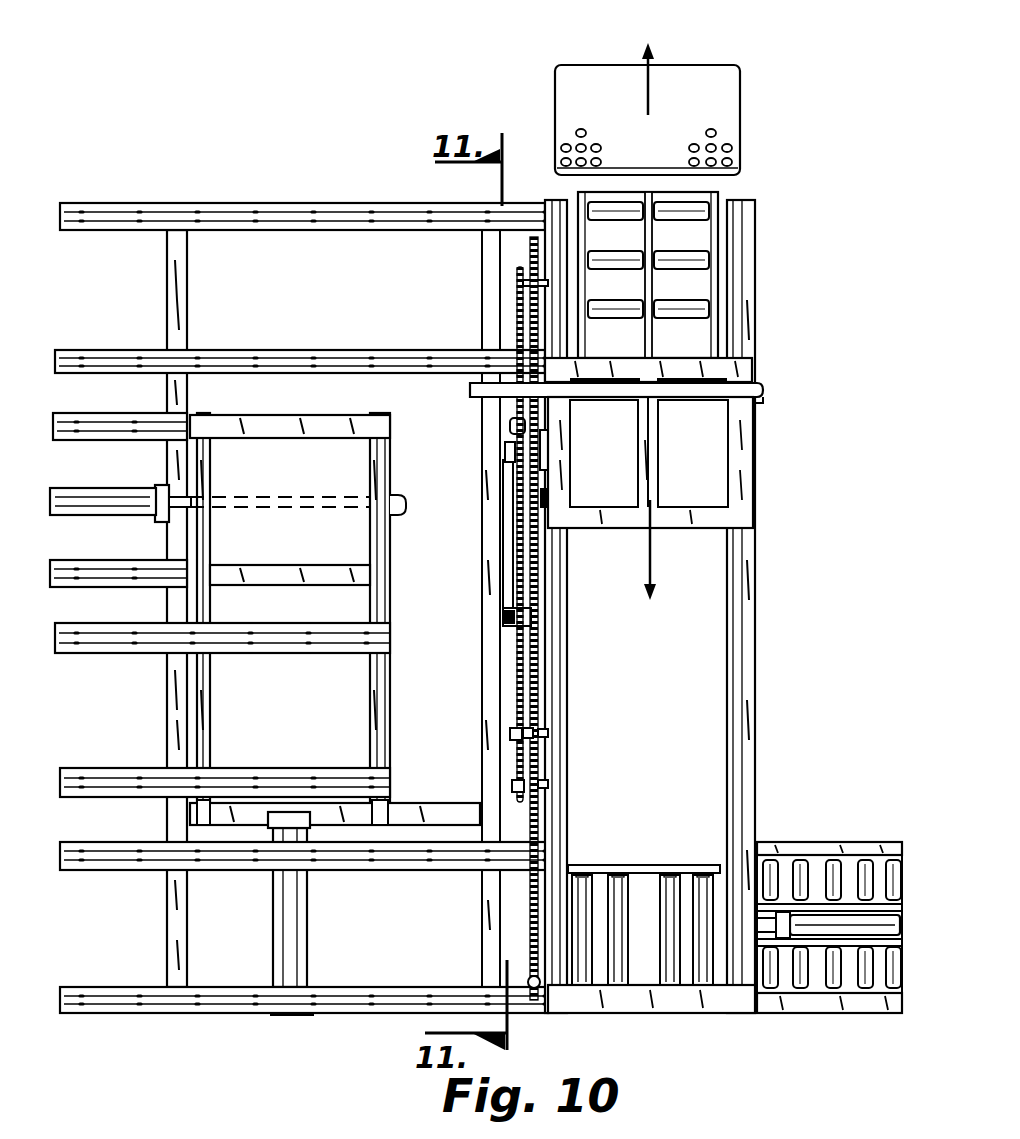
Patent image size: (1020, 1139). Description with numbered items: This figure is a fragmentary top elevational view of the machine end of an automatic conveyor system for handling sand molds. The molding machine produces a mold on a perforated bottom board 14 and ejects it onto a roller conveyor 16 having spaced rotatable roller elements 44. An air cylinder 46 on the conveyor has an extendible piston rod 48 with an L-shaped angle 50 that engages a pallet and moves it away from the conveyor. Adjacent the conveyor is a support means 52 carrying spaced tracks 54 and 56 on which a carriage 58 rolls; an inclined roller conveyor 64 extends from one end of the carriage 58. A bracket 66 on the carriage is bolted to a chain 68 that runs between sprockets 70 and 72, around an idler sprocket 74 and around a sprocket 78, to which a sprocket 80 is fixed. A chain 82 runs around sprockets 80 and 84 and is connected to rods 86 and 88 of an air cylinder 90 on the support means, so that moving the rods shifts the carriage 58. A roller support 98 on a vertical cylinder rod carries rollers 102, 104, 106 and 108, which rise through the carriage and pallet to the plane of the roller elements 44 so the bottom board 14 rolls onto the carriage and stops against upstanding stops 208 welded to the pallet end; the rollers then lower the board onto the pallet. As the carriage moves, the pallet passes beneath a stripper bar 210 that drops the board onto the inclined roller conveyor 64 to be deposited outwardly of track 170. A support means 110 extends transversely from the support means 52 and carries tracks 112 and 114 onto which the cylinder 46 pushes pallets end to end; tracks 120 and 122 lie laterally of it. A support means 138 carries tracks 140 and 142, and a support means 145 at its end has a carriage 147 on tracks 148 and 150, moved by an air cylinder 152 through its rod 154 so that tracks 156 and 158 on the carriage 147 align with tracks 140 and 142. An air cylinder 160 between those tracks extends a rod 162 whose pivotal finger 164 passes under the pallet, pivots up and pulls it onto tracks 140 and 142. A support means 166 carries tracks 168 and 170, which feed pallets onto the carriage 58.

The perforated bottom board 14 is at (726, 109).
The roller conveyor 16 is at (817, 923).
The roller elements 44 is at (800, 858).
The air cylinder 46 is at (847, 922).
The piston rod 48 is at (780, 938).
The L-shaped angle 50 is at (765, 932).
The support means 52 is at (700, 1016).
The track 54 is at (742, 663).
The track 56 is at (557, 680).
The carriage 58 is at (758, 458).
The inclined roller conveyor 64 is at (718, 200).
The bracket 66 is at (545, 442).
The chain 68 is at (520, 690).
The sprocket 70 is at (528, 248).
The sprocket 72 is at (536, 990).
The idler sprocket 74 is at (548, 733).
The sprocket 78 is at (548, 783).
The sprocket 80 is at (512, 786).
The chain 82 is at (515, 648).
The sprocket 84 is at (515, 283).
The rod 86 is at (510, 425).
The rod 88 is at (510, 733).
The air cylinder 90 is at (507, 578).
The roller support 98 is at (655, 864).
The roller 102 is at (700, 880).
The roller 104 is at (671, 880).
The roller 106 is at (620, 879).
The roller 108 is at (584, 879).
The support means 110 is at (448, 975).
The track 112 is at (352, 1006).
The track 114 is at (430, 857).
The track 120 is at (122, 786).
The track 122 is at (148, 641).
The support means 138 is at (249, 504).
The track 140 is at (125, 575).
The track 142 is at (90, 413).
The support means 145 is at (399, 465).
The carriage 147 is at (328, 608).
The track 148 is at (373, 539).
The track 150 is at (203, 545).
The air cylinder 152 is at (278, 947).
The rod 154 is at (292, 808).
The track 156 is at (278, 797).
The track 158 is at (289, 640).
The air cylinder 160 is at (108, 513).
The rod 162 is at (175, 497).
The pivotal finger 164 is at (408, 521).
The support means 166 is at (283, 258).
The track 168 is at (369, 362).
The track 170 is at (401, 216).
The upstanding stops 208 is at (545, 497).
The stripper bar 210 is at (757, 385).